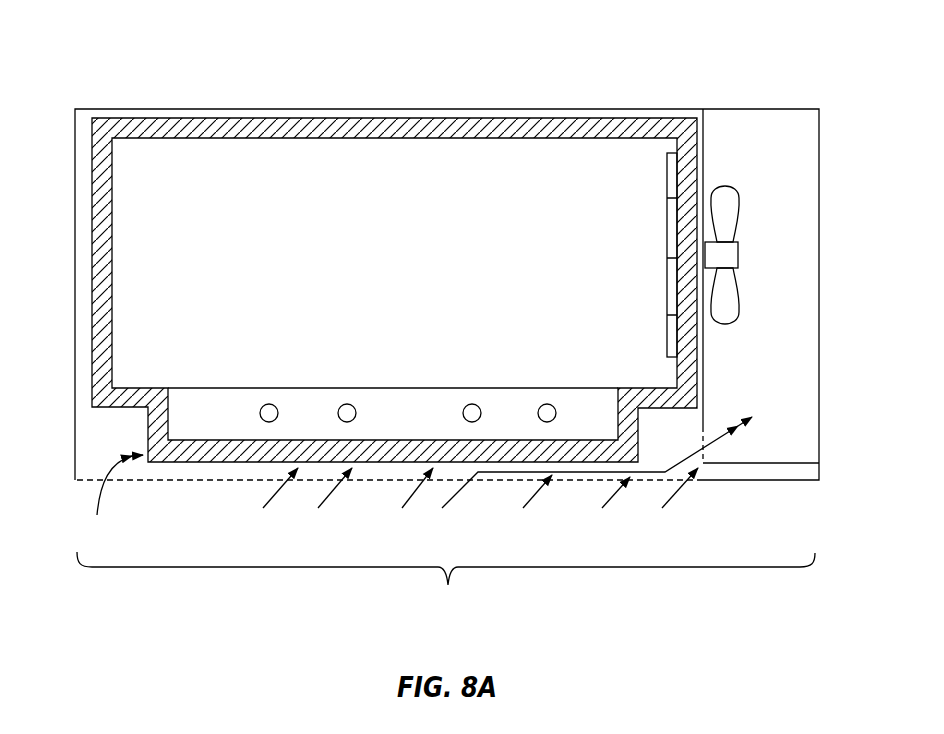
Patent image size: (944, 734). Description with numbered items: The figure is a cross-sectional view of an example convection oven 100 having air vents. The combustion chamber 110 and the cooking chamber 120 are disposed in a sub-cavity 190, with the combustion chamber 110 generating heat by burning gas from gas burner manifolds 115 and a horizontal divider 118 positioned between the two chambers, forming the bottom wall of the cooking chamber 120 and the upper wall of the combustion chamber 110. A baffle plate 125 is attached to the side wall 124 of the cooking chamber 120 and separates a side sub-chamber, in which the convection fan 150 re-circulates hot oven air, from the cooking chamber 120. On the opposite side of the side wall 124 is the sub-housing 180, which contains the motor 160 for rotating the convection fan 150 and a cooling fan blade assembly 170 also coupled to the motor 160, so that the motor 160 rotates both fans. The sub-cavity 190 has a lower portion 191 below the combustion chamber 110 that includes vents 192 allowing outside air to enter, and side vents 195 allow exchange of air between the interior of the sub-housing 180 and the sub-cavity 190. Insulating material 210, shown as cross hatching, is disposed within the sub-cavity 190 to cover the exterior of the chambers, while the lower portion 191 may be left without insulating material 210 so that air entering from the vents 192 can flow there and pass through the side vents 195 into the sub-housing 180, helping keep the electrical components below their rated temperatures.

The convection oven 100 is at (53, 82).
The combustion chamber 110 is at (338, 280).
The gas burner manifold 115 is at (268, 423).
The horizontal divider 118 is at (497, 387).
The cooking chamber 120 is at (432, 430).
The side wall 124 is at (705, 160).
The baffle plate 125 is at (664, 244).
The convection fan 150 is at (666, 280).
The motor 160 is at (752, 241).
The cooling fan blade assembly 170 is at (740, 198).
The sub-housing 180 is at (758, 423).
The sub-cavity 190 is at (446, 586).
The lower portion 191 is at (382, 483).
The vents 192 is at (120, 484).
The side vents 195 is at (703, 433).
The insulating material 210 is at (470, 117).